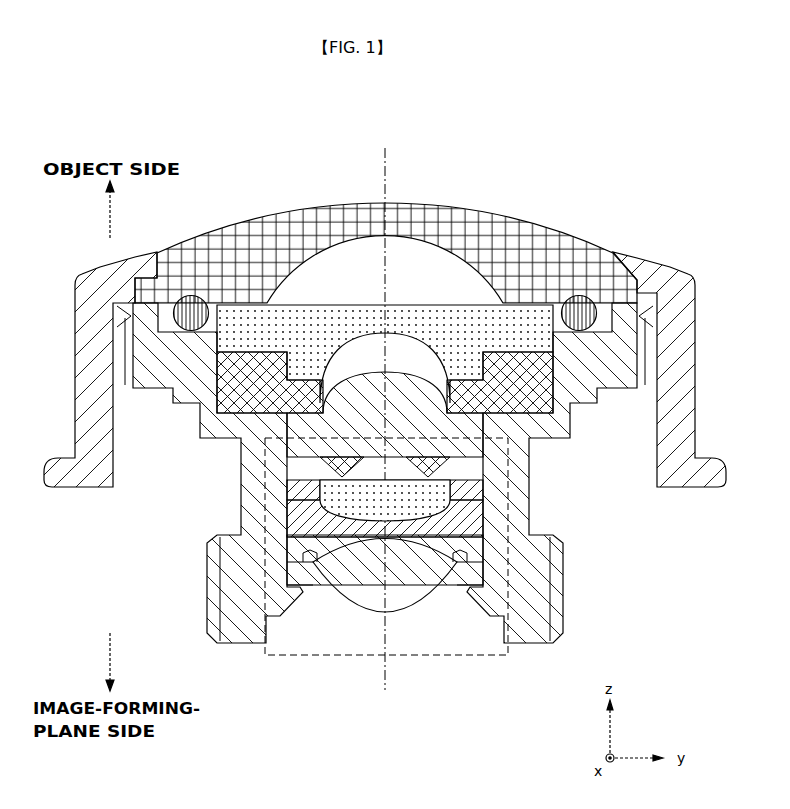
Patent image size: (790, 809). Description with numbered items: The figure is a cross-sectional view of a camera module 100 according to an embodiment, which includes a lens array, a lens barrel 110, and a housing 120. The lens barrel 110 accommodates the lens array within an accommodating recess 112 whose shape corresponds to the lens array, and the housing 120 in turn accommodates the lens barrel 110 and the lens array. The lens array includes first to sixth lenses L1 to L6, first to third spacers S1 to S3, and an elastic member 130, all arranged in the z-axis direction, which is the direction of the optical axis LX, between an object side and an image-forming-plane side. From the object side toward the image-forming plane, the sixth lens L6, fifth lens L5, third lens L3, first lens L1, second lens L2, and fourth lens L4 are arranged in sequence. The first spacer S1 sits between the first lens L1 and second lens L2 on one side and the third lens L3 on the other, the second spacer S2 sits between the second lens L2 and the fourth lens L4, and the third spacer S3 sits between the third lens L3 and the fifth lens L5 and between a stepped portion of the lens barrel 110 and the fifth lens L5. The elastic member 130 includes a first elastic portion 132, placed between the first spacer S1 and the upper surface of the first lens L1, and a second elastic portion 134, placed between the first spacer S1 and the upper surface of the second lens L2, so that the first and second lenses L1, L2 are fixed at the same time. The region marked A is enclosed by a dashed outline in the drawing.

The camera module 100 is at (674, 131).
The lens barrel 110 is at (389, 524).
The accommodating recess 112 is at (322, 543).
The housing 120 is at (672, 287).
The elastic member 130 is at (467, 497).
The first elastic portion 132 is at (478, 458).
The second elastic portion 134 is at (450, 478).
The first lens L1 is at (445, 527).
The second lens L2 is at (468, 550).
The third lens L3 is at (467, 422).
The fourth lens L4 is at (440, 572).
The fifth lens L5 is at (535, 340).
The sixth lens L6 is at (520, 206).
The optical axis LX is at (387, 158).
The first spacer S1 is at (307, 467).
The second spacer S2 is at (303, 554).
The third spacer S3 is at (240, 388).
The region A is at (300, 657).